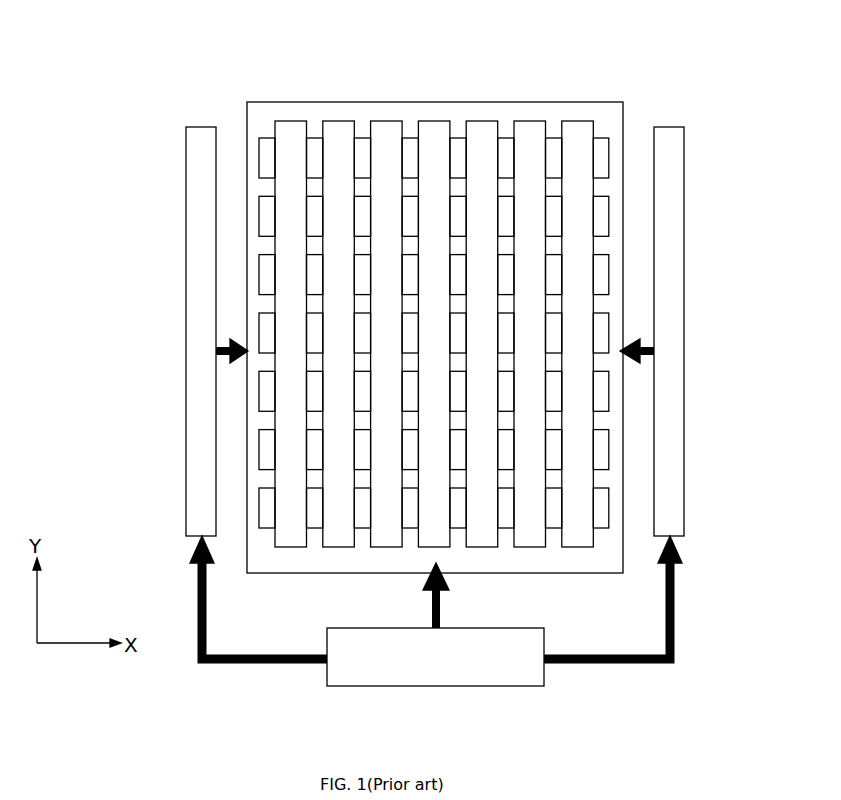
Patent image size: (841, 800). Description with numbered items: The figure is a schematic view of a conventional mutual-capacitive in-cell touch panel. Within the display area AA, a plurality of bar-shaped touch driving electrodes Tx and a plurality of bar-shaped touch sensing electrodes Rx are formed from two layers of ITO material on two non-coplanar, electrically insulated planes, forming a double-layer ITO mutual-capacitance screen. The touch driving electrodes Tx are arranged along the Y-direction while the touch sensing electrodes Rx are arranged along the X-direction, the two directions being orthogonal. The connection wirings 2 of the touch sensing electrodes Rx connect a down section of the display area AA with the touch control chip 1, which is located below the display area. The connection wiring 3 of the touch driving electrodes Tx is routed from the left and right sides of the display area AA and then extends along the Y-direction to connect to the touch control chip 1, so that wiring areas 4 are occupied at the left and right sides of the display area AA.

The touch control chip 1 is at (407, 670).
The connection wirings 2 is at (441, 613).
The connection wiring 3 is at (248, 665).
The wiring areas 4 is at (197, 453).
The touch driving electrode Tx is at (267, 160).
The touch sensing electrode Rx is at (293, 137).
The display area AA is at (455, 116).